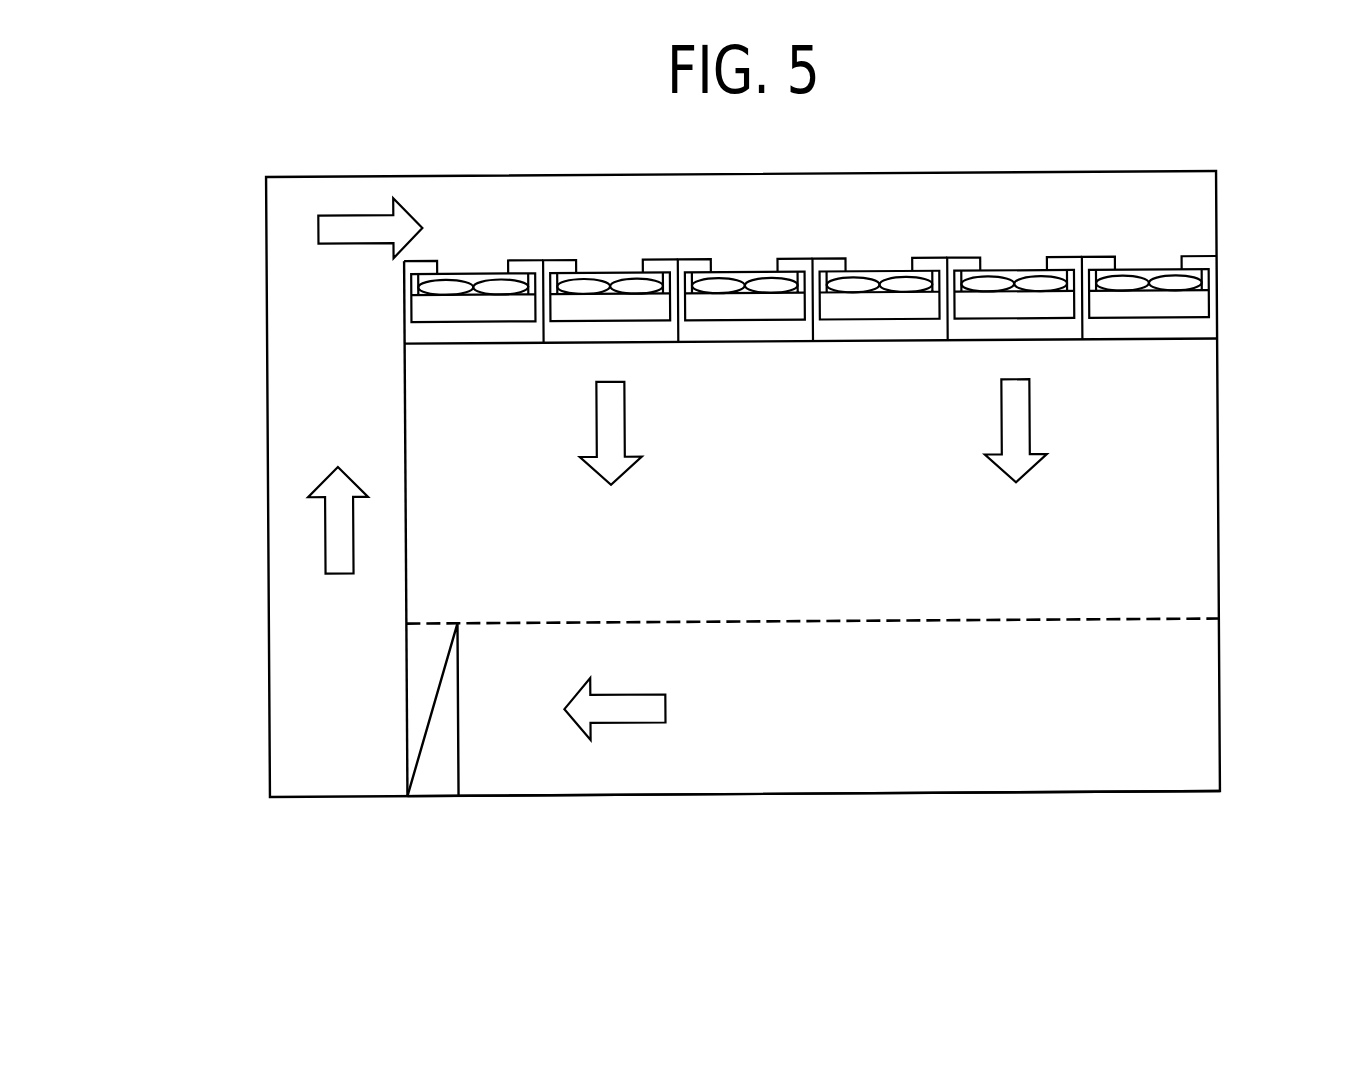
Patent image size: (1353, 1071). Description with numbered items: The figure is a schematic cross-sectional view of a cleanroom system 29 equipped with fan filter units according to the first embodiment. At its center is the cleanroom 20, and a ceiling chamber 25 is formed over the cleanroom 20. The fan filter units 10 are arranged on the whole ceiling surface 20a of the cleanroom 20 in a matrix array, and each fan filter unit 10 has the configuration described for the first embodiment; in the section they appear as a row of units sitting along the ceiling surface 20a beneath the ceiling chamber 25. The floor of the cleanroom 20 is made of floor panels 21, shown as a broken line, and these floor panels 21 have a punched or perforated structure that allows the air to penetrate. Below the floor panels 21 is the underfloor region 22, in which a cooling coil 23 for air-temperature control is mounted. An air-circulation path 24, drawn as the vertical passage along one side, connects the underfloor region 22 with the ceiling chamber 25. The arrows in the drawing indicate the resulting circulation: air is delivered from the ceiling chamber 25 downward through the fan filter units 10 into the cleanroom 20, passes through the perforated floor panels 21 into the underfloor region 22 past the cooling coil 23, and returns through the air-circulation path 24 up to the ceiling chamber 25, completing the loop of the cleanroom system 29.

The fan filter unit 10 is at (473, 272).
The cleanroom 20 is at (1210, 499).
The ceiling surface 20a is at (1184, 343).
The floor panel 21 is at (1153, 623).
The underfloor region 22 is at (797, 775).
The cooling coil 23 is at (438, 780).
The air-circulation path 24 is at (288, 437).
The ceiling chamber 25 is at (924, 184).
The cleanroom system 29 is at (1234, 140).